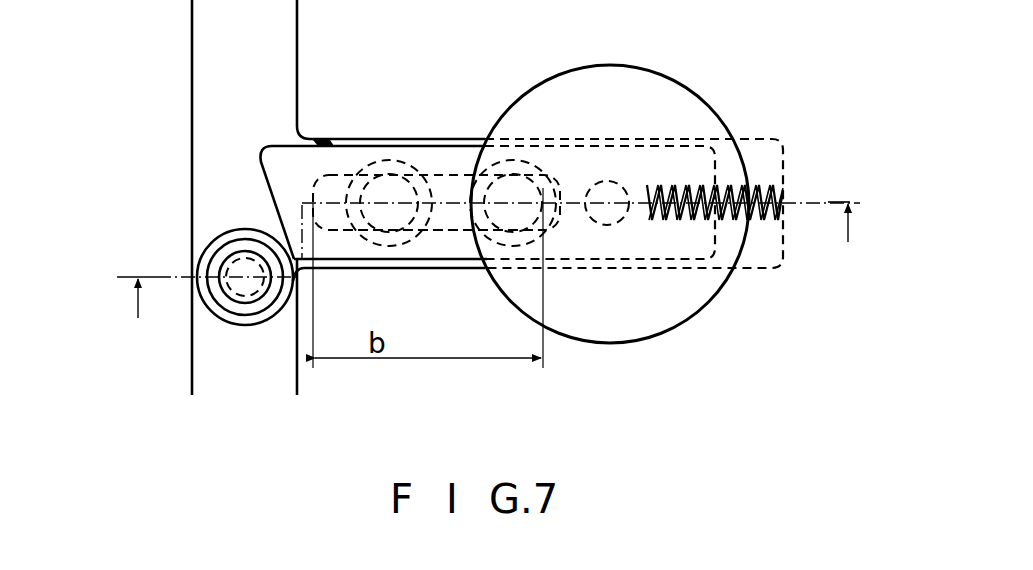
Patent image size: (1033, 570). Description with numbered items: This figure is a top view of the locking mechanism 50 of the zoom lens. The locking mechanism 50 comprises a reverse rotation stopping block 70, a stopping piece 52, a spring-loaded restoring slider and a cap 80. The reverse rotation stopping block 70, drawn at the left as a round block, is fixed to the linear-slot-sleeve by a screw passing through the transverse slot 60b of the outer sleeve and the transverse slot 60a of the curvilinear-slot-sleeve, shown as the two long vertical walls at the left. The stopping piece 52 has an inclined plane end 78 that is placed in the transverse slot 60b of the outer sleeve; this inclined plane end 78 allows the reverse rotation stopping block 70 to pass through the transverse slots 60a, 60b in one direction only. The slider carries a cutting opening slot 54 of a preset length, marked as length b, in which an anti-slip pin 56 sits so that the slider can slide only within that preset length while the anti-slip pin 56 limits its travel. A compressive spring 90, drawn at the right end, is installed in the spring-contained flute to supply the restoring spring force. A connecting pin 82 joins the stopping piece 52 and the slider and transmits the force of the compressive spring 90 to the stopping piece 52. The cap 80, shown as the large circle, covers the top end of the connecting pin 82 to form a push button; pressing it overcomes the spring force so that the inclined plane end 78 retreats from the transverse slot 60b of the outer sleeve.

The locking mechanism 50 is at (753, 64).
The stopping piece 52 is at (428, 150).
The cutting opening slot 54 is at (438, 232).
The anti-slip pin 56 is at (388, 165).
The transverse slot of the curvilinear-slot-sleeve 60a is at (415, 197).
The transverse slot of the outer sleeve 60b is at (202, 82).
The reverse rotation stopping block 70 is at (208, 259).
The inclined plane end 78 is at (268, 178).
The cap 80 is at (583, 78).
The connecting pin 82 is at (610, 186).
The compressive spring 90 is at (760, 185).